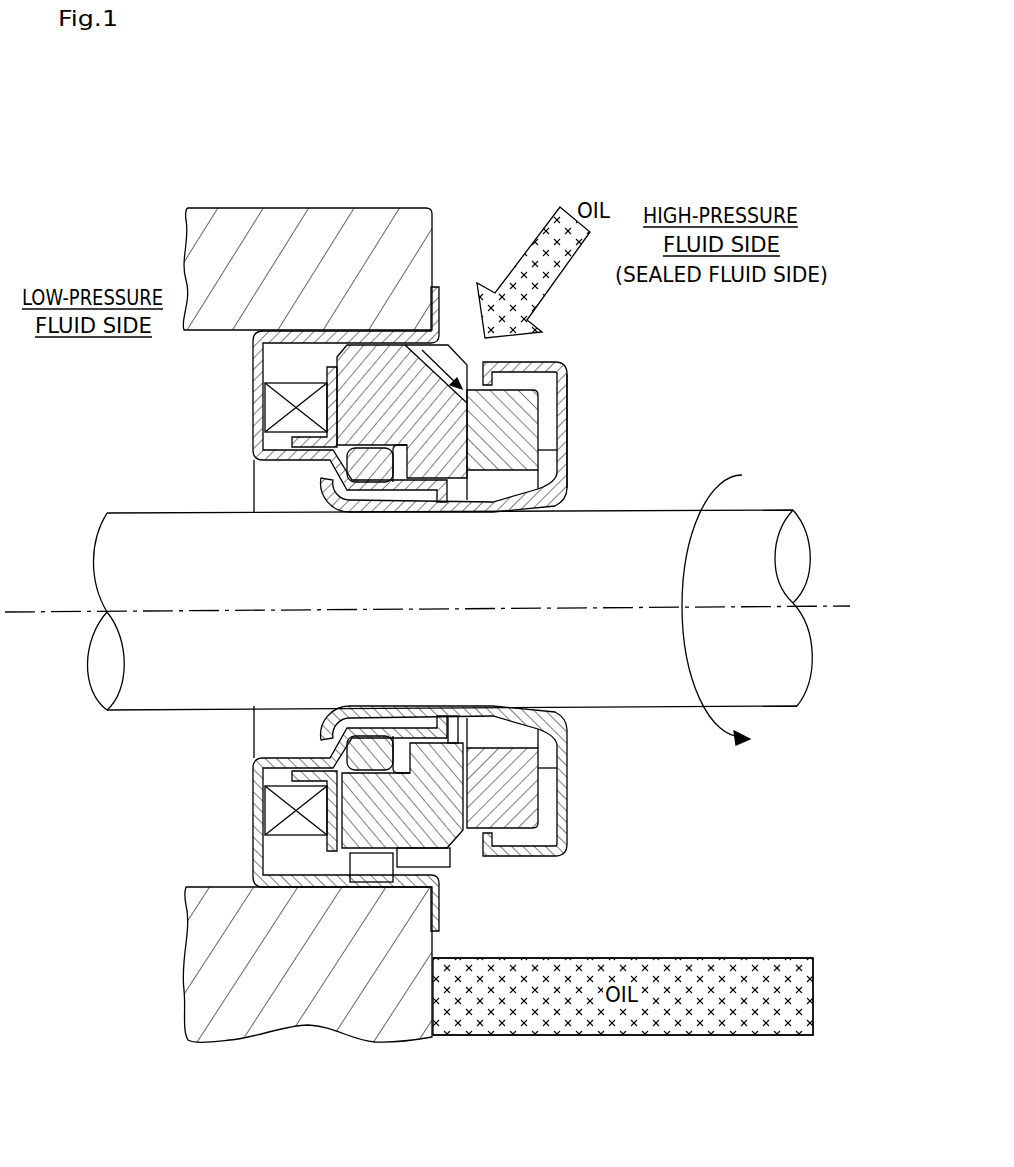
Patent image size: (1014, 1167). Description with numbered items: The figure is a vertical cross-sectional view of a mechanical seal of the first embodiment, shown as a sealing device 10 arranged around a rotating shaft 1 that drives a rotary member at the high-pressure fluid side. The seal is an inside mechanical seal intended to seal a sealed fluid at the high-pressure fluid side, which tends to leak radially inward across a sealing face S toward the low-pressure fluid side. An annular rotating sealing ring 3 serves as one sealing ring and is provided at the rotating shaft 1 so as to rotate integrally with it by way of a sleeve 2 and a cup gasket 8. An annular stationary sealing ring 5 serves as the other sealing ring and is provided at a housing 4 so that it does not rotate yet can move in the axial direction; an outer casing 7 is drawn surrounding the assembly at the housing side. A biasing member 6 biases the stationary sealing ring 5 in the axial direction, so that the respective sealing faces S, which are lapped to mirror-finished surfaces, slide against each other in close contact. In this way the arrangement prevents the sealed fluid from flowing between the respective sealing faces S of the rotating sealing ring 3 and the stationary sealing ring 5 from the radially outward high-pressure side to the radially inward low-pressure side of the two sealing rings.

The rotating shaft 1 is at (366, 657).
The sleeve 2 is at (490, 505).
The rotating sealing ring 3 is at (533, 460).
The housing 4 is at (263, 230).
The stationary sealing ring 5 is at (380, 375).
The biasing member 6 is at (265, 452).
The outer casing 7 is at (254, 388).
The cup gasket 8 is at (545, 400).
The sealing device 10 is at (414, 516).
The sealing face S is at (503, 390).